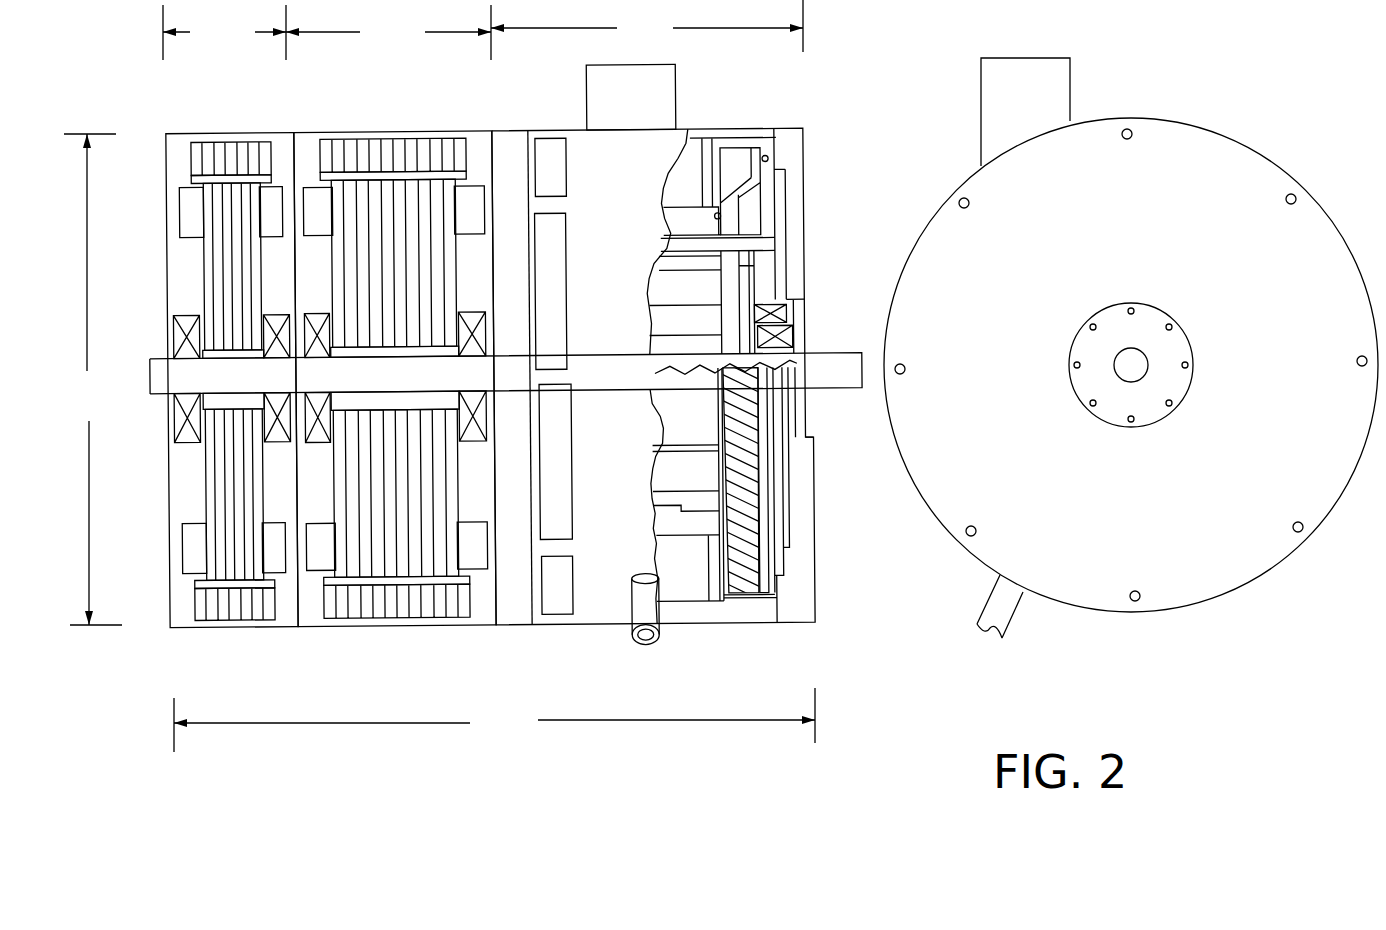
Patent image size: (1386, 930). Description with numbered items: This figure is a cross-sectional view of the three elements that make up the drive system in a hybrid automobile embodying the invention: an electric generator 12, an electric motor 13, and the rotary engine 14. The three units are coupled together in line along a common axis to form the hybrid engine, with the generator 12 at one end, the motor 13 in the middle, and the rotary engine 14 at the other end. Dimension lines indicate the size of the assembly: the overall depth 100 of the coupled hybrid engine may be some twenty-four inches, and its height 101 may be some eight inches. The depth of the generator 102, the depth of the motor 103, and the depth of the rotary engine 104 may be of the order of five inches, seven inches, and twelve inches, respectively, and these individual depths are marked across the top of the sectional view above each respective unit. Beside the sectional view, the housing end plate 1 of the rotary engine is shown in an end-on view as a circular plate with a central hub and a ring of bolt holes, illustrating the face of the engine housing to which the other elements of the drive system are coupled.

The housing end plate 1 is at (1030, 343).
The electric generator 12 is at (203, 132).
The electric motor 13 is at (340, 132).
The rotary engine 14 is at (554, 130).
The depth 100 is at (494, 720).
The height 101 is at (92, 379).
The depth of the generator 102 is at (224, 32).
The depth of the motor 103 is at (388, 32).
The depth of the rotary engine 104 is at (647, 26).